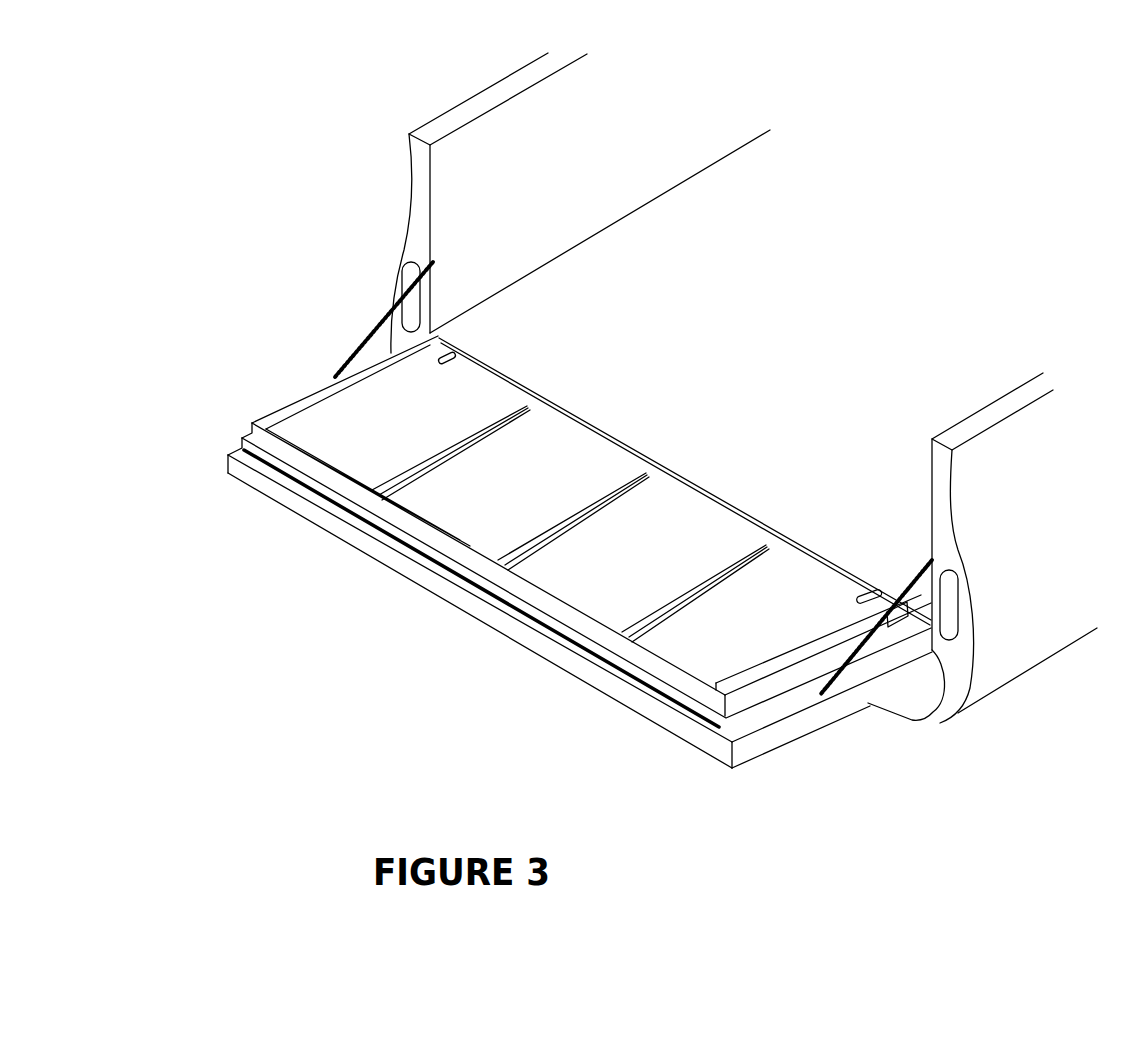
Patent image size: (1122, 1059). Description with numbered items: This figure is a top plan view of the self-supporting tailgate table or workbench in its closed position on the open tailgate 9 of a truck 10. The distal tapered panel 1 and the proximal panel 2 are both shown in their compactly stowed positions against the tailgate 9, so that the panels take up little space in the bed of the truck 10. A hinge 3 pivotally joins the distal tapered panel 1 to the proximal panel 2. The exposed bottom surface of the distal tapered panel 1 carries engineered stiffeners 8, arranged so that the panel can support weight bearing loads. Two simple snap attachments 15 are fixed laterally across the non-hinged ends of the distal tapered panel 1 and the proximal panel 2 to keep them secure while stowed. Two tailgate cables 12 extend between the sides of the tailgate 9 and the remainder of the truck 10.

The distal tapered panel 1 is at (578, 589).
The proximal panel 2 is at (719, 742).
The hinge 3 is at (226, 461).
The engineered stiffeners 8 is at (370, 503).
The tailgate 9 is at (800, 736).
The truck 10 is at (1027, 445).
The tailgate cables 12 is at (848, 706).
The snap attachments 15 is at (879, 578).